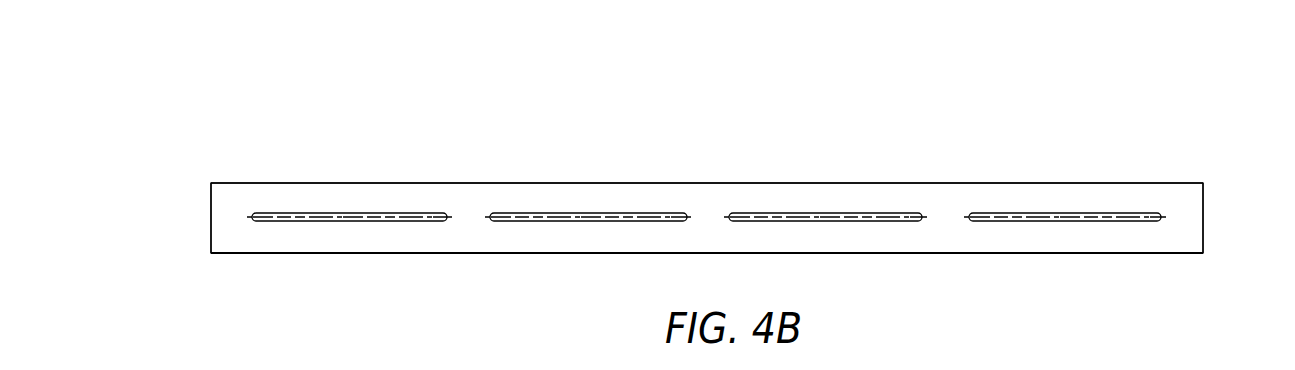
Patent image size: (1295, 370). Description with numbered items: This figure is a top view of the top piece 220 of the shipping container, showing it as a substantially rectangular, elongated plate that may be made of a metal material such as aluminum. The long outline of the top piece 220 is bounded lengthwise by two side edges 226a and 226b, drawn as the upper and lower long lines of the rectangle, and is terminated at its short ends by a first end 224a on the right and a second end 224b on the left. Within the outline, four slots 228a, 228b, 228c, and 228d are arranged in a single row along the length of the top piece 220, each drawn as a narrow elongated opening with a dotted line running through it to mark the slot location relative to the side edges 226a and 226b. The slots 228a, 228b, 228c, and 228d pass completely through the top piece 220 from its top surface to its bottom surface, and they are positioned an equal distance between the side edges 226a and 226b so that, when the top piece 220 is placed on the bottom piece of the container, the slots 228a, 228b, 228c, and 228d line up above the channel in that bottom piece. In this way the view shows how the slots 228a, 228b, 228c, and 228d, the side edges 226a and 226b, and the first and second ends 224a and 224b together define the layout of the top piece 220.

The top piece 220 is at (1214, 124).
The first end 224a is at (1203, 237).
The second end 224b is at (211, 236).
The side edge 226a is at (1000, 183).
The side edge 226b is at (1095, 254).
The slot 228a is at (390, 215).
The slot 228b is at (630, 215).
The slot 228c is at (868, 215).
The slot 228d is at (1113, 215).